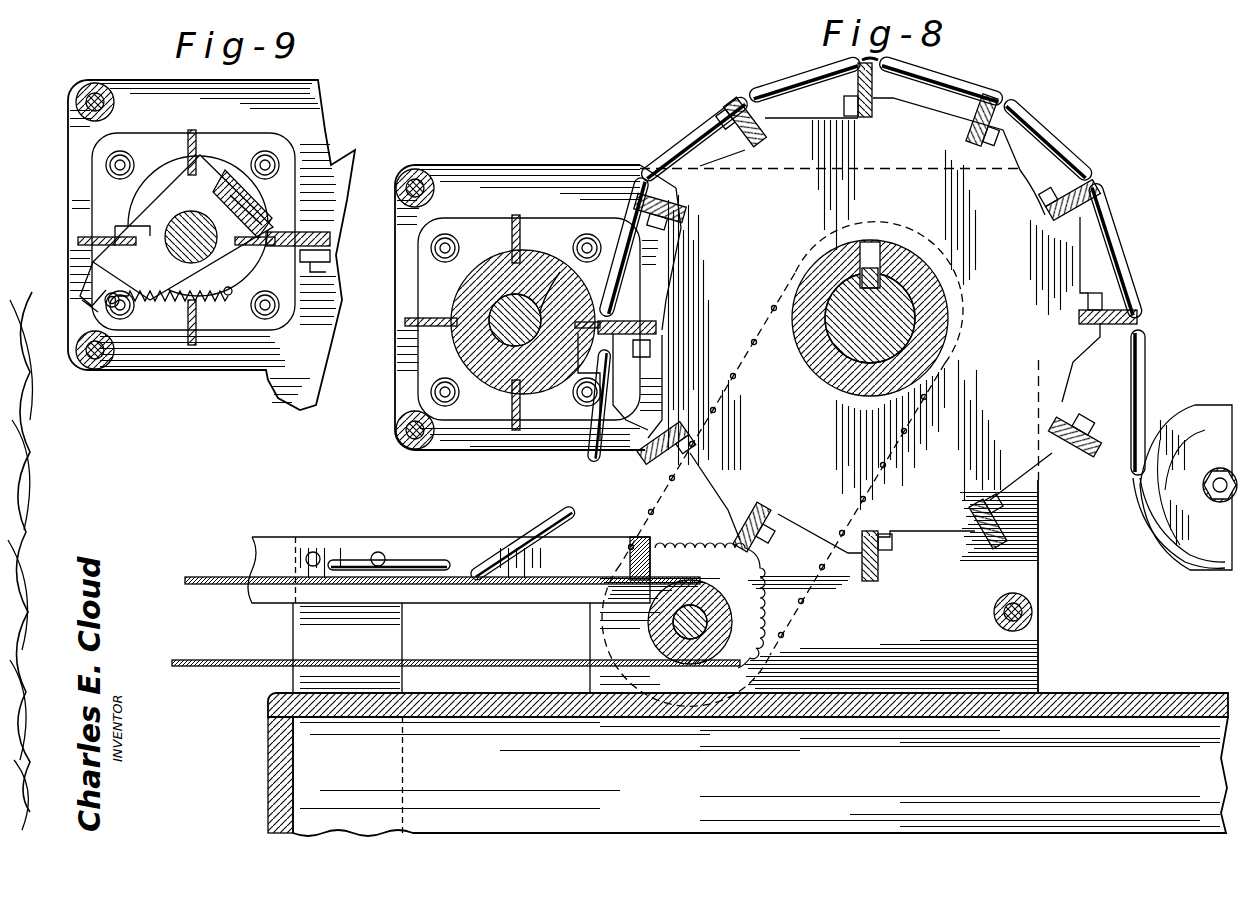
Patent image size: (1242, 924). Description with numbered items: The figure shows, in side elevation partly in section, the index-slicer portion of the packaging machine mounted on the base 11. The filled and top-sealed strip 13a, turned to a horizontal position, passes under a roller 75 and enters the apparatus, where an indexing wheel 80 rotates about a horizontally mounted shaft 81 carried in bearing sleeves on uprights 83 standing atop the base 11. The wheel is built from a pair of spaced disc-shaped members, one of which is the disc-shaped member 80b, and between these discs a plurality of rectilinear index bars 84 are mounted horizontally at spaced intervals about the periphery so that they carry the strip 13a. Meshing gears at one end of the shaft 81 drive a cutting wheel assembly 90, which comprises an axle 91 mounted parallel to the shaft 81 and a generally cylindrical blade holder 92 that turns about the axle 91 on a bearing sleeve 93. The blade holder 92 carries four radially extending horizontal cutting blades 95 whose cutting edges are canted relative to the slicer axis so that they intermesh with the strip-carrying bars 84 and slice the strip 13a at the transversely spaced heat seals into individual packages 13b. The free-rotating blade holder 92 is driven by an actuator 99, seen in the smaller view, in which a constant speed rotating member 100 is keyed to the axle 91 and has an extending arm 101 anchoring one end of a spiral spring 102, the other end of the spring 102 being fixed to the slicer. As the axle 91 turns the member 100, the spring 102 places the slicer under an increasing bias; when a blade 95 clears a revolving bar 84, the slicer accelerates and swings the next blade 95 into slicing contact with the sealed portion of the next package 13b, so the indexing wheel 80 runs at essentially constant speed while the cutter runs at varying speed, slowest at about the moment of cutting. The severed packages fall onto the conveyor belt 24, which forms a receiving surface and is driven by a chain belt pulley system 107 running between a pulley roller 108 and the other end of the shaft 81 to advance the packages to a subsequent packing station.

In FIG. 8, the base 11 is at (1148, 707).
In FIG. 8, the strip 13a is at (1120, 253).
In FIG. 8, the individual packages 13b is at (610, 378).
In FIG. 8, the conveyor belt 24 is at (216, 576).
In FIG. 8, the roller 75 is at (1218, 430).
In FIG. 8, the indexing wheel 80 is at (1010, 134).
In FIG. 8, the disc-shaped member 80b is at (1020, 370).
In FIG. 8, the shaft 81 is at (934, 279).
In FIG. 9, the uprights 83 is at (270, 396).
In FIG. 8, the uprights 83 is at (1013, 592).
In FIG. 9, the index bars 84 is at (314, 233).
In FIG. 8, the index bars 84 is at (656, 330).
In FIG. 8, the cutting wheel assembly 90 is at (566, 257).
In FIG. 9, the axle 91 is at (186, 240).
In FIG. 8, the axle 91 is at (516, 345).
In FIG. 8, the blade holder 92 is at (478, 258).
In FIG. 8, the bearing sleeve 93 is at (527, 296).
In FIG. 9, the cutting blades 95 is at (194, 146).
In FIG. 8, the cutting blades 95 is at (630, 316).
In FIG. 9, the actuator 99 is at (256, 196).
In FIG. 9, the constant speed rotating member 100 is at (140, 228).
In FIG. 9, the extending arm 101 is at (88, 292).
In FIG. 9, the spiral spring 102 is at (163, 302).
In FIG. 8, the chain belt pulley system 107 is at (840, 512).
In FIG. 8, the pulley roller 108 is at (736, 636).